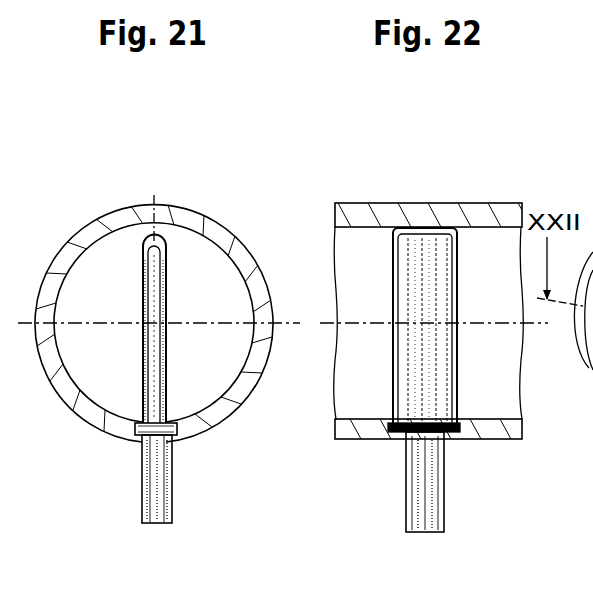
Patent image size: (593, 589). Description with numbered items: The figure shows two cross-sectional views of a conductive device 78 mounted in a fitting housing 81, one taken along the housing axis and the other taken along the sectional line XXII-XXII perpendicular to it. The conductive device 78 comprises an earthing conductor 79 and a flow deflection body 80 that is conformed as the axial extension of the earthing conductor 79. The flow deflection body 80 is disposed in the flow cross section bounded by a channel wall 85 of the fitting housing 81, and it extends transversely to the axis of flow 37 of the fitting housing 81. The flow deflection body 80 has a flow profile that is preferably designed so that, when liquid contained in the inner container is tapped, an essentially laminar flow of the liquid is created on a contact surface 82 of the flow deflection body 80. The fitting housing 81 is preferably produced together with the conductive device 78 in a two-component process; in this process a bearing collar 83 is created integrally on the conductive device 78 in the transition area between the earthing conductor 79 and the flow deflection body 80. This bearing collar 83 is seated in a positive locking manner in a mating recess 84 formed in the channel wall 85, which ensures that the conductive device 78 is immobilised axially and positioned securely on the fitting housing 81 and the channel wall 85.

In FIG. 22, the axis of flow 37 is at (334, 377).
In FIG. 21, the conductive device 78 is at (187, 455).
In FIG. 21, the earthing conductor 79 is at (143, 487).
In FIG. 21, the flow deflection body 80 is at (167, 296).
In FIG. 22, the flow deflection body 80 is at (403, 273).
In FIG. 22, the fitting housing 81 is at (515, 198).
In FIG. 22, the contact surface 82 is at (408, 382).
In FIG. 22, the bearing collar 83 is at (452, 440).
In FIG. 22, the mating recess 84 is at (452, 421).
In FIG. 22, the channel wall 85 is at (388, 211).